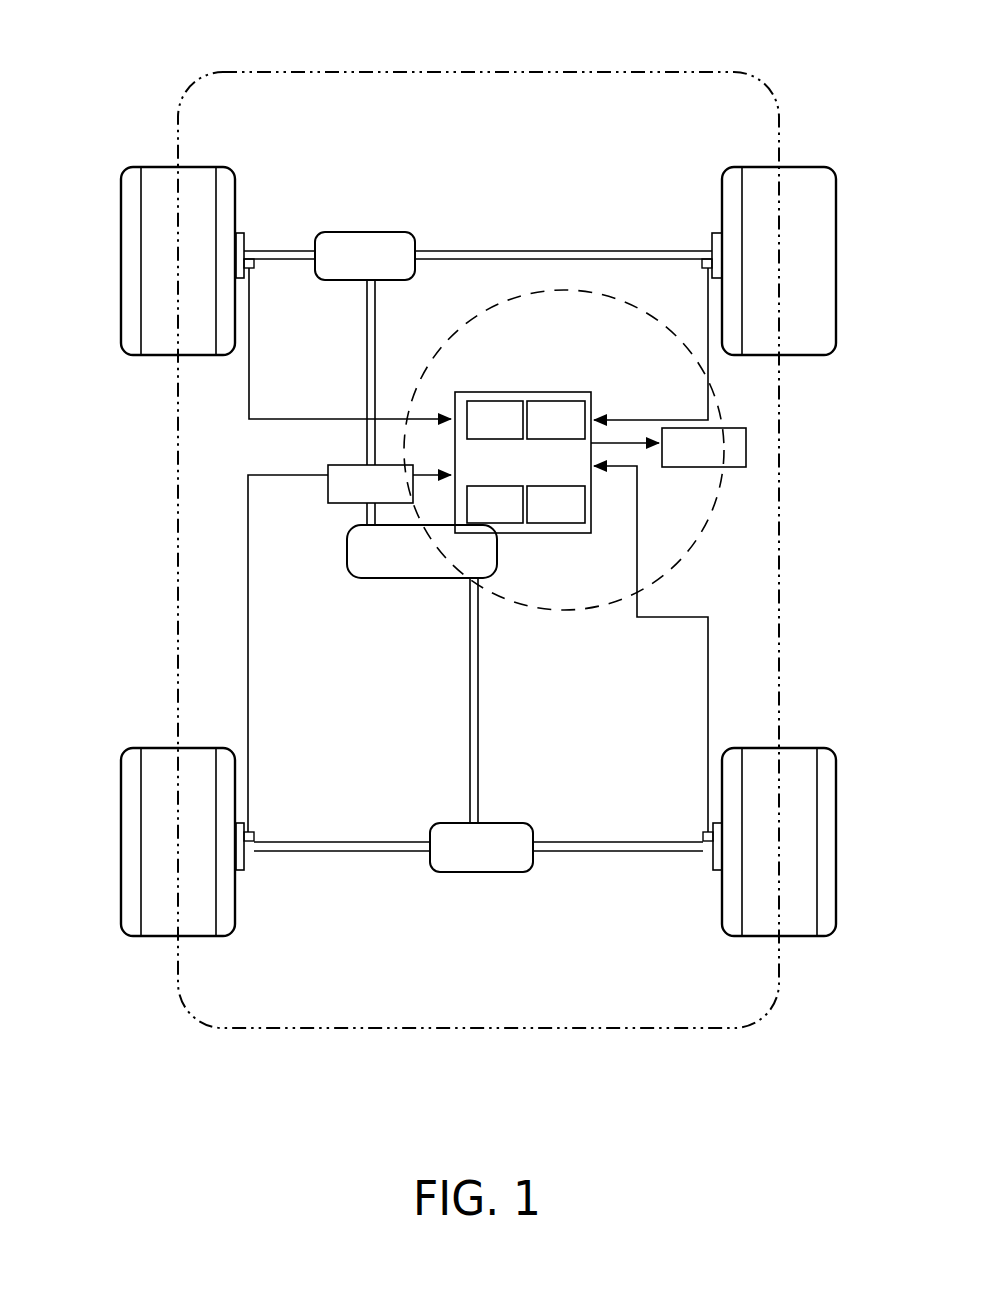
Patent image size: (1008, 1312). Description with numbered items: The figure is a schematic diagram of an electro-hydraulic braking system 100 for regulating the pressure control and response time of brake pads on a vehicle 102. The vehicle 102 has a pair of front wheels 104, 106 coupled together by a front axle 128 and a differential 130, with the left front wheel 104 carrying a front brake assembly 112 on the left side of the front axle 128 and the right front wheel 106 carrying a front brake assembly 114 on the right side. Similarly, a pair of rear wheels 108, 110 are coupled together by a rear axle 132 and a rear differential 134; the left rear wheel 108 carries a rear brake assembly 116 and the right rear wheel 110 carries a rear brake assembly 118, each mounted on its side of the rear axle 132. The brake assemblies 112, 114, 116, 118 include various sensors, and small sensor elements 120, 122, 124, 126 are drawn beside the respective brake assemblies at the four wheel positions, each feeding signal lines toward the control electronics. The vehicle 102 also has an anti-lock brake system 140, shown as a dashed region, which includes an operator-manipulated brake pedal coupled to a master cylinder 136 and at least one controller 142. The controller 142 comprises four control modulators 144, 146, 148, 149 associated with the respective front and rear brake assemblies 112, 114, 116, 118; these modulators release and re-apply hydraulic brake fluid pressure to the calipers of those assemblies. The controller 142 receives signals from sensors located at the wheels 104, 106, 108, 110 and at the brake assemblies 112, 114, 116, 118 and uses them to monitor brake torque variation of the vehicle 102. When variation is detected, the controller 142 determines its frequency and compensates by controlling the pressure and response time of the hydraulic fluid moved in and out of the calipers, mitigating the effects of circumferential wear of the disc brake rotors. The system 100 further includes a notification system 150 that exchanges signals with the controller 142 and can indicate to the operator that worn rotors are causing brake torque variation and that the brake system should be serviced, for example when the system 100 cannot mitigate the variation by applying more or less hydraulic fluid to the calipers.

The electro-hydraulic braking system 100 is at (68, 1052).
The vehicle 102 is at (477, 68).
The front wheel 104 is at (160, 167).
The front wheel 106 is at (802, 167).
The rear wheel 108 is at (160, 748).
The rear wheel 110 is at (802, 748).
The front brake assembly 112 is at (237, 233).
The front brake assembly 114 is at (716, 233).
The rear brake assembly 116 is at (240, 870).
The rear brake assembly 118 is at (715, 870).
The front left wheel speed sensor 120 is at (252, 268).
The front right wheel speed sensor 122 is at (705, 268).
The rear left wheel speed sensor 124 is at (257, 837).
The rear right wheel speed sensor 126 is at (702, 835).
The front axle 128 is at (447, 250).
The differential 130 is at (346, 271).
The rear axle 132 is at (548, 852).
The rear differential 134 is at (463, 859).
The master cylinder 136 is at (351, 499).
The anti-lock brake system 140 is at (680, 550).
The controller 142 is at (504, 466).
The control modulator 144 is at (495, 420).
The control modulator 146 is at (556, 420).
The control modulator 148 is at (495, 504).
The control modulator 149 is at (556, 504).
The notification system 150 is at (685, 462).